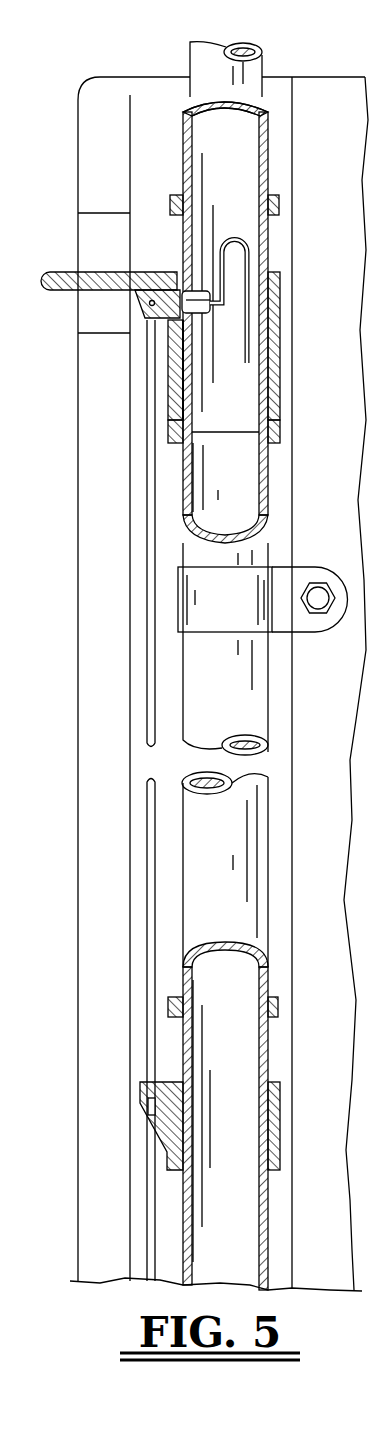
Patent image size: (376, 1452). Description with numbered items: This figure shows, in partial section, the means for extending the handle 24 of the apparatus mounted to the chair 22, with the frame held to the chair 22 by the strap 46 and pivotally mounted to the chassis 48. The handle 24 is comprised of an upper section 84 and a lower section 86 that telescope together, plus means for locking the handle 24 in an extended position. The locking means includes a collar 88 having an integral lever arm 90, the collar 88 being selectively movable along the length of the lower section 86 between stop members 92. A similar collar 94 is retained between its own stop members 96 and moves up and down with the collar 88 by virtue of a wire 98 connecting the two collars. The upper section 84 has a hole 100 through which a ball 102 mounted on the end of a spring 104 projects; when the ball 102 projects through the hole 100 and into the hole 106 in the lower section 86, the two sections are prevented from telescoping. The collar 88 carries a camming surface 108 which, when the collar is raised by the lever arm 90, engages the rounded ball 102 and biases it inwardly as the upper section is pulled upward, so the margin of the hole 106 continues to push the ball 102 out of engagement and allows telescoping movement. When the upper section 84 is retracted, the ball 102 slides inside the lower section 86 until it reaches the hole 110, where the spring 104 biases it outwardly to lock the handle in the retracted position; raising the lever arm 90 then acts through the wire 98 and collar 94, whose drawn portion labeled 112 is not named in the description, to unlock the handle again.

The chair 22 is at (320, 708).
The handle 24 is at (190, 64).
The strap 46 is at (216, 606).
The chassis 48 is at (308, 658).
The upper section 84 is at (262, 60).
The lower section 86 is at (259, 465).
The collar 88 is at (272, 350).
The lever arm 90 is at (56, 272).
The stop members 92 is at (170, 206).
The collar 94 is at (275, 1113).
The stop members 96 is at (276, 1012).
The wire 98 is at (147, 828).
The hole 100 is at (190, 291).
The ball 102 is at (163, 298).
The spring 104 is at (235, 237).
The hole 106 is at (168, 333).
The camming surface 108 is at (183, 322).
The hole 110 is at (172, 1085).
The lower collar 112 is at (167, 1140).